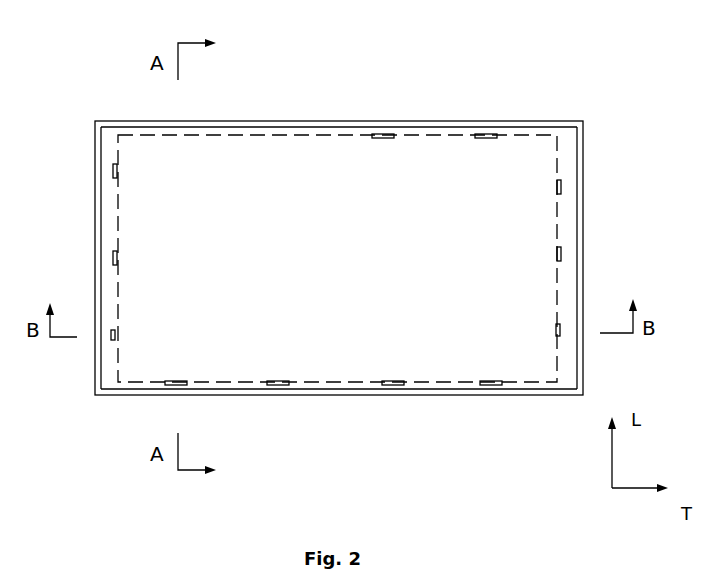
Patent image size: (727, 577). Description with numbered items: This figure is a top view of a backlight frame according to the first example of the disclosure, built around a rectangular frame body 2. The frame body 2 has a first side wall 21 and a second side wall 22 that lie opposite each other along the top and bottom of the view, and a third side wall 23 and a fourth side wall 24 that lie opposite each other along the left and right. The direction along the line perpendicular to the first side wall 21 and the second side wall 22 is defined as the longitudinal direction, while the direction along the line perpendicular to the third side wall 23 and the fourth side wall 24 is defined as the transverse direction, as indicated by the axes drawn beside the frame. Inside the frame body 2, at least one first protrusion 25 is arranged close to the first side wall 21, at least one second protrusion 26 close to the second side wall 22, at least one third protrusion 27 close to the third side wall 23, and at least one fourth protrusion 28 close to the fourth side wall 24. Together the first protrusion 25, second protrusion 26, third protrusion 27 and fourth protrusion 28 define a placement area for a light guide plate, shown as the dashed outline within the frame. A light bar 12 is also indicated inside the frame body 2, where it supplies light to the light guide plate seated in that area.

The frame body 2 is at (458, 126).
The light bar 12 is at (522, 155).
The first side wall 21 is at (328, 123).
The second side wall 22 is at (378, 387).
The third side wall 23 is at (97, 267).
The fourth side wall 24 is at (577, 285).
The first protrusion 25 is at (381, 133).
The second protrusion 26 is at (278, 385).
The third protrusion 27 is at (113, 257).
The fourth protrusion 28 is at (560, 253).